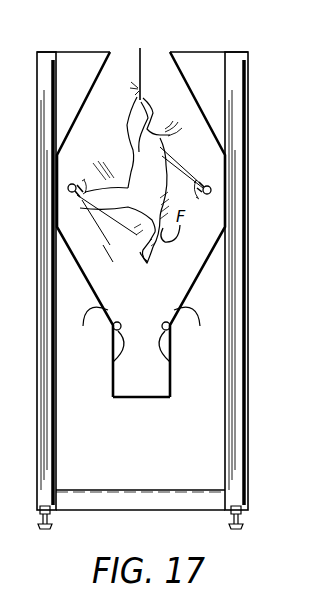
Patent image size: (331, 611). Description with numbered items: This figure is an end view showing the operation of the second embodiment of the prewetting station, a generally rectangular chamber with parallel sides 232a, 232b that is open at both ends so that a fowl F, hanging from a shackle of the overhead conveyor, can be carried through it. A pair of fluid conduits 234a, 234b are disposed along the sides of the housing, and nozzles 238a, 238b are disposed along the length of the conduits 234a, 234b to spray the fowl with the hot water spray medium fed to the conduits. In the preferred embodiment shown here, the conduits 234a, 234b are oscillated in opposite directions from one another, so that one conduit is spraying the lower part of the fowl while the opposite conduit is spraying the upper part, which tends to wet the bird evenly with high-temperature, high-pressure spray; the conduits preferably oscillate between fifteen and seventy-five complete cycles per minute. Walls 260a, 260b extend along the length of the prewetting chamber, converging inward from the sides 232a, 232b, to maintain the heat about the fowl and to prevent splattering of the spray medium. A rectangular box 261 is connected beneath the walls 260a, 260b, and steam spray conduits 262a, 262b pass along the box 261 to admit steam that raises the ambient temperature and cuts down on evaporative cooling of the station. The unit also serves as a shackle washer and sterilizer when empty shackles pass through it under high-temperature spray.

The side 232a is at (56, 440).
The side 232b is at (248, 224).
The fluid conduit 234a is at (69, 184).
The fluid conduit 234b is at (211, 191).
The nozzle 238a is at (70, 198).
The nozzle 238b is at (207, 180).
The wall 260a is at (100, 72).
The wall 260b is at (178, 70).
The rectangular box 261 is at (147, 397).
The steam spray conduit 262a is at (117, 360).
The steam spray conduit 262b is at (168, 361).